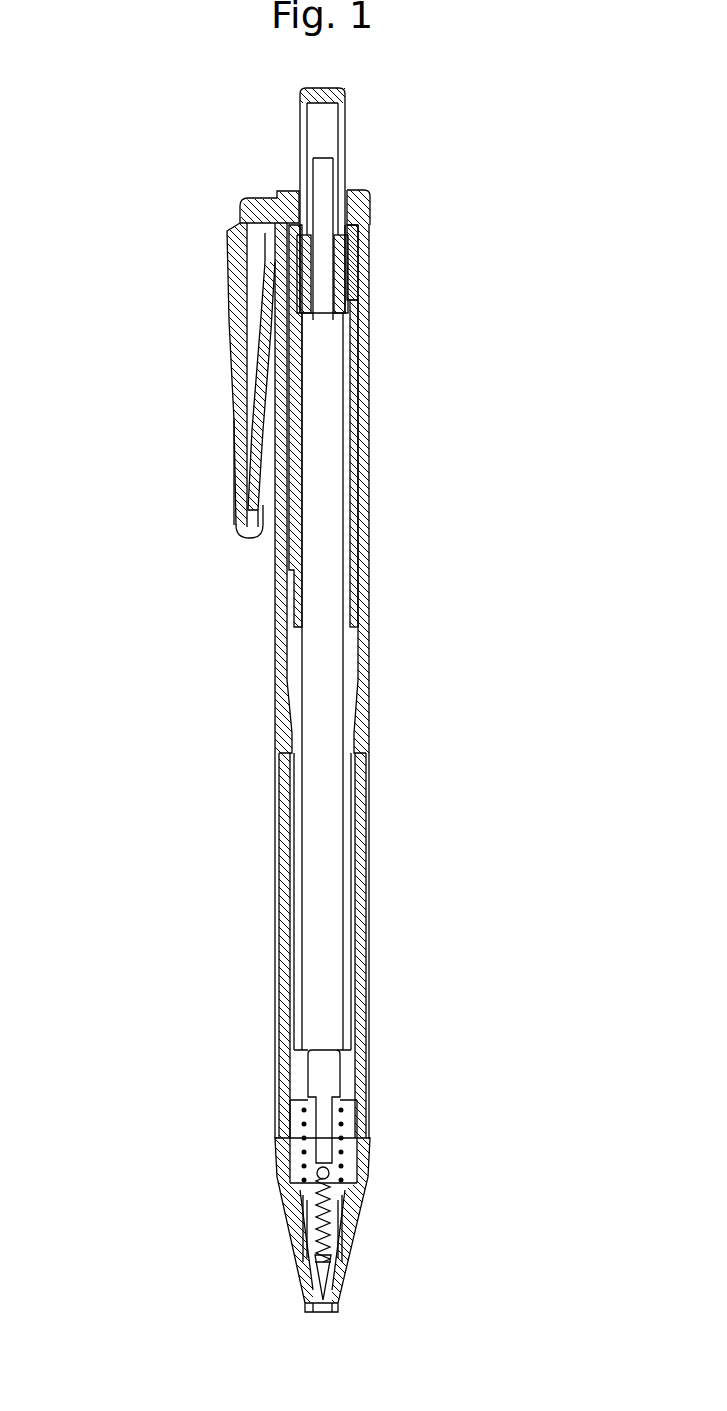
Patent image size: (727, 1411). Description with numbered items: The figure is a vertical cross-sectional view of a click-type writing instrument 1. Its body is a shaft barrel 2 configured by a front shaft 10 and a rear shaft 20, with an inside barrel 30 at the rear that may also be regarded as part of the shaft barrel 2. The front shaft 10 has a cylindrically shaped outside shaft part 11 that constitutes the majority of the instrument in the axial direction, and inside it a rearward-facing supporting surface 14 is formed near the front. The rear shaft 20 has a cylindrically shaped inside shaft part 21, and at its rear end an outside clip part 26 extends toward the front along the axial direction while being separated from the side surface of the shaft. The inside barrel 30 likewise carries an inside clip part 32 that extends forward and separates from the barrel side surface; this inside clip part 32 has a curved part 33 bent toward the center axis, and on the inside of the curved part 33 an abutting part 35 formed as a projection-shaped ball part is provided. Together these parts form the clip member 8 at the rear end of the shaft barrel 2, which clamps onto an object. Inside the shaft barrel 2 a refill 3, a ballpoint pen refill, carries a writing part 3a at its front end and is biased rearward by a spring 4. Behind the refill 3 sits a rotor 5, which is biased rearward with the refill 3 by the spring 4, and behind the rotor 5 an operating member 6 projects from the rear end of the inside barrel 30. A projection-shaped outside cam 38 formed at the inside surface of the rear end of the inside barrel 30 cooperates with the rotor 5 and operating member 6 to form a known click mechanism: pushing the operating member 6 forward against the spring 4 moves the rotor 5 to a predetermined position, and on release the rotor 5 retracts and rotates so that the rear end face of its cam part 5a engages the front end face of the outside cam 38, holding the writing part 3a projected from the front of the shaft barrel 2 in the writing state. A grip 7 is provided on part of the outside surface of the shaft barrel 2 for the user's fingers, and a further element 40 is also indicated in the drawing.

The writing instrument 1 is at (485, 565).
The shaft barrel 2 is at (385, 738).
The refill 3 is at (350, 660).
The writing part 3a is at (340, 1305).
The spring 4 is at (340, 1120).
The rotor 5 is at (357, 250).
The cam part 5a is at (357, 290).
The operating member 6 is at (300, 145).
The grip 7 is at (160, 942).
The clip member 8 is at (147, 370).
The front shaft 10 is at (362, 1218).
The outside shaft part 11 is at (275, 1031).
The supporting surface 14 is at (305, 1248).
The rear shaft 20 is at (368, 470).
The inside shaft part 21 is at (277, 912).
The outside clip part 26 is at (235, 450).
The inside barrel 30 is at (372, 207).
The inside clip part 32 is at (250, 322).
The curved part 33 is at (258, 380).
The abutting part 35 is at (290, 395).
The outside cam 38 is at (360, 290).
The grip 40 is at (272, 965).